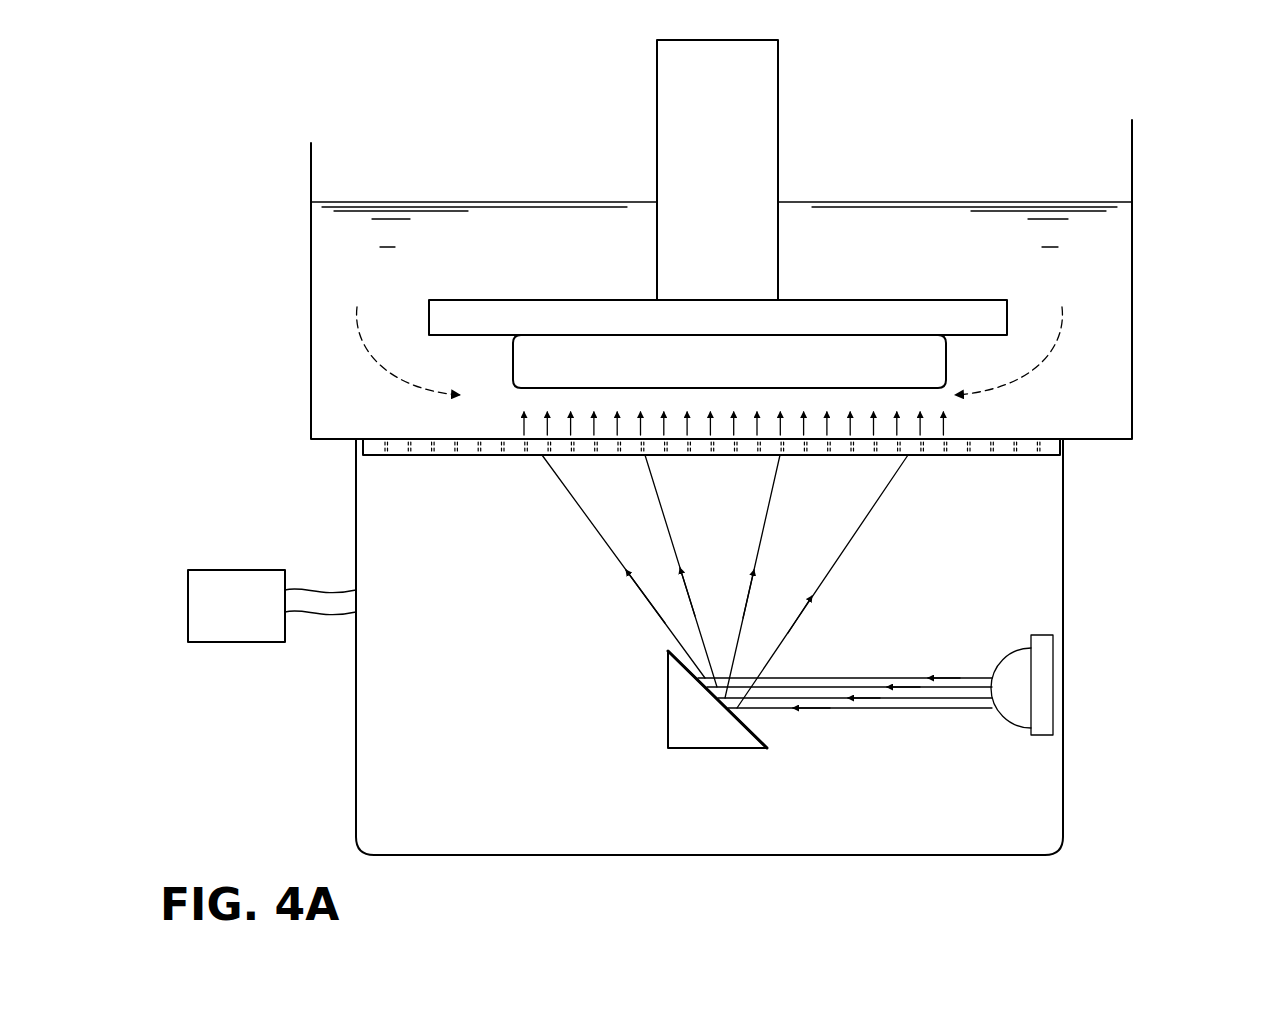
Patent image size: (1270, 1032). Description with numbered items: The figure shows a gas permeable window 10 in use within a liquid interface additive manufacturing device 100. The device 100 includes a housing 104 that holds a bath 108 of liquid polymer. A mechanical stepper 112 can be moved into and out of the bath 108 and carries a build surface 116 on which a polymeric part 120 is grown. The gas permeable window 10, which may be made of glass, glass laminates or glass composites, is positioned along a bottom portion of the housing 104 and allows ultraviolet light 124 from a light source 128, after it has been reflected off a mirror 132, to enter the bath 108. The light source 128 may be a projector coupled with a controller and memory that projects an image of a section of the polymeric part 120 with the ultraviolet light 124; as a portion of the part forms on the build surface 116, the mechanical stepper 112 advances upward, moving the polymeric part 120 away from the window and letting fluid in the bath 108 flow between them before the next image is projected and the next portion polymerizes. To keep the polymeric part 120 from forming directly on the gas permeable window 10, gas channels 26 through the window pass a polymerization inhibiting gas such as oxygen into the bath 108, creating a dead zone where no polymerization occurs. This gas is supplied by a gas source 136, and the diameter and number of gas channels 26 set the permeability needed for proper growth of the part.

The liquid interface additive manufacturing device 100 is at (1147, 97).
The housing 104 is at (311, 215).
The bath 108 is at (500, 228).
The mechanical stepper 112 is at (762, 112).
The build surface 116 is at (987, 337).
The polymeric part 120 is at (866, 355).
The gas permeable window 10 is at (1020, 457).
The gas channels 26 is at (497, 453).
The ultraviolet light 124 is at (675, 556).
The light source 128 is at (1044, 678).
The mirror 132 is at (688, 728).
The gas source 136 is at (246, 611).